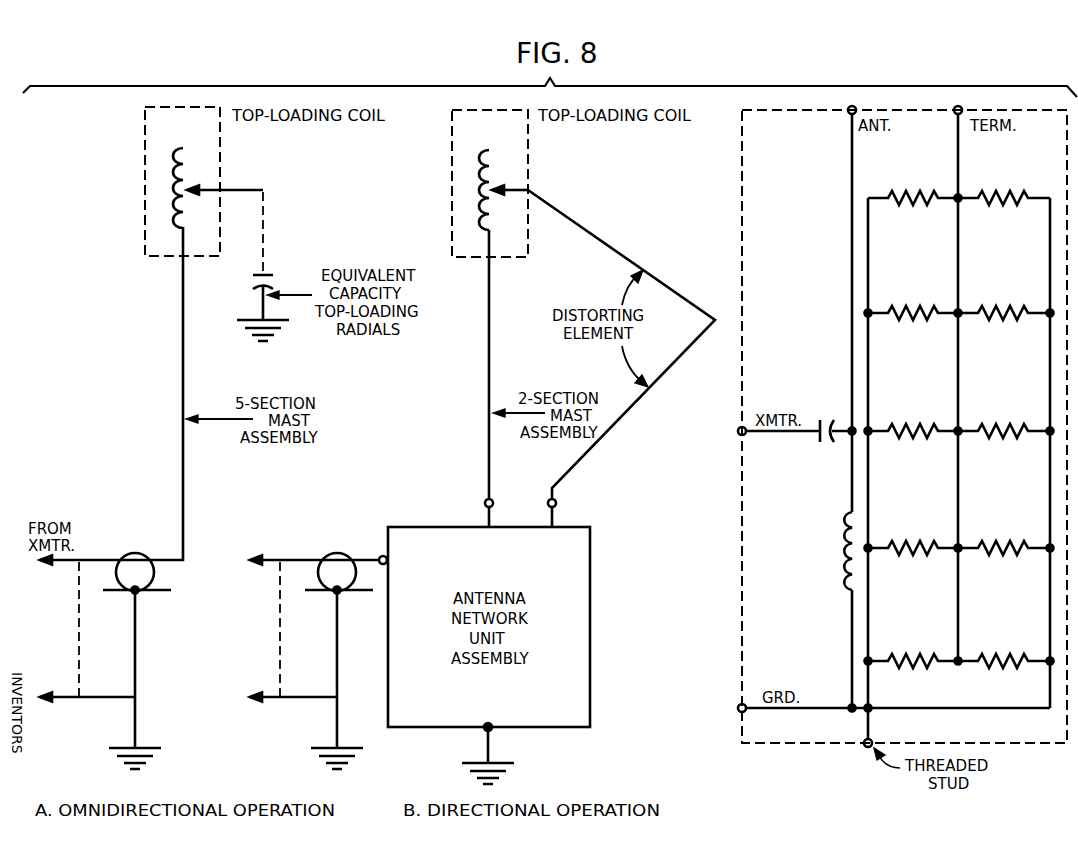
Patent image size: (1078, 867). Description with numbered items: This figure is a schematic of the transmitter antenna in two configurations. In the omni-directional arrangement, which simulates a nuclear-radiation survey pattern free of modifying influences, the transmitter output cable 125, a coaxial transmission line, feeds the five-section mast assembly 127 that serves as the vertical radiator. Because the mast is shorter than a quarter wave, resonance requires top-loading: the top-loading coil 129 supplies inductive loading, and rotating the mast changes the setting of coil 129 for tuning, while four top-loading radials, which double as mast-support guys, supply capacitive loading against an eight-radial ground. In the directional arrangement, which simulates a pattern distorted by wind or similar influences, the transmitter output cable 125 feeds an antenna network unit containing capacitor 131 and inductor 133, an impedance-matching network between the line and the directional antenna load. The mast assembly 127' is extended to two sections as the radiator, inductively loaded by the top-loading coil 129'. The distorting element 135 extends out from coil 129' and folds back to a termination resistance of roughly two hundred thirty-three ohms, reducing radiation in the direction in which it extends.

The transmitter output cable 125 is at (135, 553).
The five-section mast assembly 127 is at (146, 396).
The mast assembly 127' is at (520, 378).
The top-loading coil 129 is at (220, 188).
The top-loading coil 129' is at (529, 190).
The capacitor 131 is at (818, 439).
The inductor 133 is at (838, 558).
The distorting element 135 is at (688, 302).